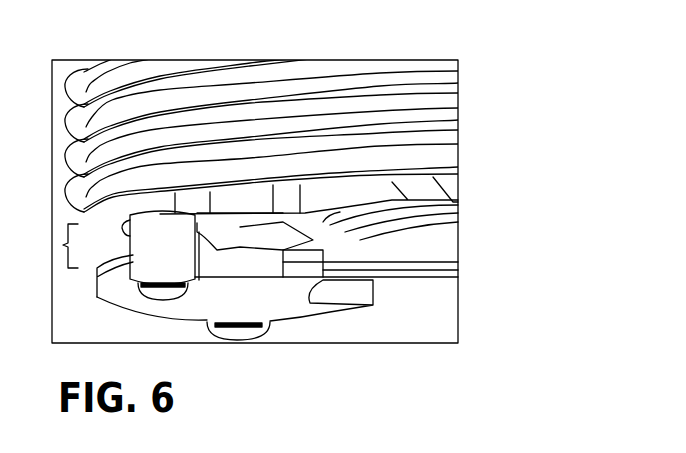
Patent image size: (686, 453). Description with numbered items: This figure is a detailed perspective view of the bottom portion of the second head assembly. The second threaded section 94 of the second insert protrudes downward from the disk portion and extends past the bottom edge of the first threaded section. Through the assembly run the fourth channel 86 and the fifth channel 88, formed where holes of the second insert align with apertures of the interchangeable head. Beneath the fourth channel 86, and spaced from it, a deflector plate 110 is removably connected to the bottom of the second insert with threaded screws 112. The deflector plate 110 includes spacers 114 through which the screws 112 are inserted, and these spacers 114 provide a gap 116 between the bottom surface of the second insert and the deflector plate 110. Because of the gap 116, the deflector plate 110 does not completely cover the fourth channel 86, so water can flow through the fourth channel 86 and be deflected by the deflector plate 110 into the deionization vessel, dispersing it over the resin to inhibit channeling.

The second threaded section 94 is at (362, 102).
The fifth channel 88 is at (411, 222).
The fourth channel 86 is at (279, 238).
The deflector plate 110 is at (290, 305).
The threaded screws 112 is at (138, 287).
The spacers 114 is at (147, 262).
The gap 116 is at (63, 245).